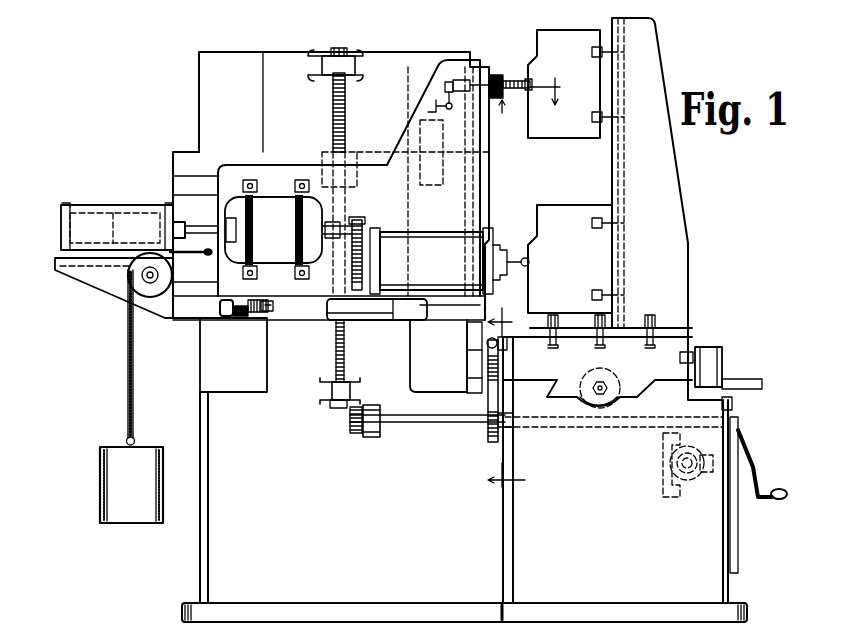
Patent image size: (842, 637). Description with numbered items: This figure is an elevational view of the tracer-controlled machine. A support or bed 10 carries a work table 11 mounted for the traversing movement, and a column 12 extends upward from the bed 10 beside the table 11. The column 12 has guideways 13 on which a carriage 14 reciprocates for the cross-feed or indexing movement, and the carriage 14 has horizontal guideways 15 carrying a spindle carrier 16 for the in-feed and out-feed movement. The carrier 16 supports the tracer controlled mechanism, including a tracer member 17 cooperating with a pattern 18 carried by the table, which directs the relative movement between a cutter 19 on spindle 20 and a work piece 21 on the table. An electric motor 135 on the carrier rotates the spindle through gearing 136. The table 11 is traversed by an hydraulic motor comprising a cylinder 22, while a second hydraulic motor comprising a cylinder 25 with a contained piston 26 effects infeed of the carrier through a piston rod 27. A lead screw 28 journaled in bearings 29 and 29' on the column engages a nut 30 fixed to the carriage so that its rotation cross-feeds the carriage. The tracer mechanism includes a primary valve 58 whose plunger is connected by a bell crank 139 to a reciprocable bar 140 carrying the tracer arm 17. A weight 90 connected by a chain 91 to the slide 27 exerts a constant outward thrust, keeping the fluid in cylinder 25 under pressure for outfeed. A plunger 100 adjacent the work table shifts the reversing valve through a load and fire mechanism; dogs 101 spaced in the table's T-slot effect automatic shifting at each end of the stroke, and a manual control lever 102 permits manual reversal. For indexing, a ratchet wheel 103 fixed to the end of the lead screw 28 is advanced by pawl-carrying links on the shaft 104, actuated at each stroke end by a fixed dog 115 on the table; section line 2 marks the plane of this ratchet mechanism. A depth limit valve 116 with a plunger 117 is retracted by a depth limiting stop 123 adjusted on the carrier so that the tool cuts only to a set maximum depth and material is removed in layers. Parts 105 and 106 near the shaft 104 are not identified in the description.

The section line 2- 2 is at (512, 399).
The support 10 is at (237, 555).
The work table 11 is at (673, 347).
The column 12 is at (281, 70).
The guideways 13 is at (408, 62).
The carriage 14 is at (173, 163).
The horizontal guideways 15 is at (187, 192).
The spindle carrier 16 is at (268, 182).
The tracer member 17 is at (515, 82).
The pattern 18 is at (547, 52).
The cutter 19 is at (523, 258).
The spindle 20 is at (498, 245).
The work piece 21 is at (553, 222).
The cylinder 22 is at (597, 402).
The cylinder 25 is at (65, 225).
The piston 26 is at (100, 207).
The piston rod 27 is at (205, 228).
The lead screw 28 is at (335, 360).
The bearing 29 is at (321, 393).
The bearing 29' is at (335, 86).
The nut 30 is at (360, 173).
The primary valve 58 is at (428, 187).
The weight 90 is at (122, 487).
The chain 91 is at (133, 355).
The plunger 100 is at (713, 377).
The dogs 101 is at (700, 343).
The manual control lever 102 is at (753, 387).
The ratchet wheel 103 is at (492, 447).
The shaft 104 is at (427, 420).
The hub 105 is at (350, 428).
The gear 106 is at (340, 412).
The fixed dog 115 is at (508, 343).
The depth limit valve 116 is at (367, 307).
The plunger 117 is at (310, 308).
The depth limiting stop 123 is at (263, 313).
The electric motor 135 is at (277, 222).
The gearing 136 is at (362, 225).
The bell crank 139 is at (433, 100).
The reciprocable bar 140 is at (460, 80).